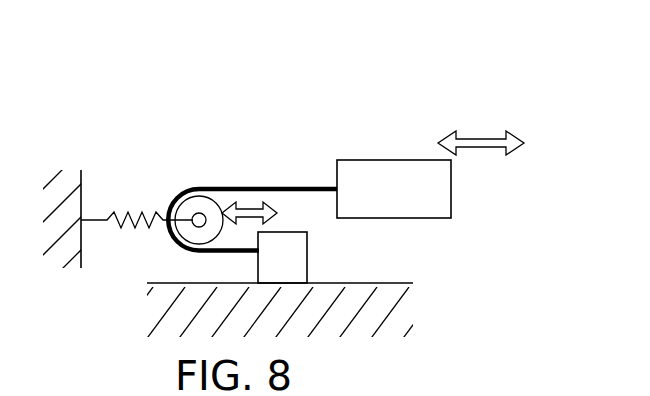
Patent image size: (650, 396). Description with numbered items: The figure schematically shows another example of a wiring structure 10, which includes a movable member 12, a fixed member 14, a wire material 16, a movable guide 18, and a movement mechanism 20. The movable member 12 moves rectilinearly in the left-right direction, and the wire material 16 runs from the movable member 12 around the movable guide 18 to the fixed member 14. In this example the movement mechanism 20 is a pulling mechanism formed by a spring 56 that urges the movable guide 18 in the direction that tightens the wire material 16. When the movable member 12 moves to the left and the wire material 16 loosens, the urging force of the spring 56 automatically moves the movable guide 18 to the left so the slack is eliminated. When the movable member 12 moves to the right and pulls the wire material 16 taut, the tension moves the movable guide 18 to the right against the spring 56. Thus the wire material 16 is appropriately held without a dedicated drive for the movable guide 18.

The wiring structure 10 is at (251, 107).
The movable member 12 is at (417, 160).
The fixed member 14 is at (307, 258).
The wire material 16 is at (273, 186).
The movable guide 18 is at (205, 204).
The spring 56 is at (137, 158).
The movement mechanism 20 is at (136, 208).